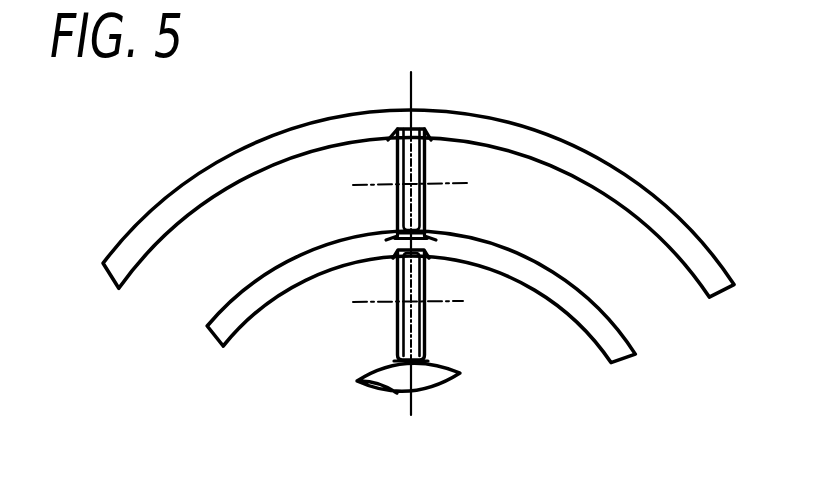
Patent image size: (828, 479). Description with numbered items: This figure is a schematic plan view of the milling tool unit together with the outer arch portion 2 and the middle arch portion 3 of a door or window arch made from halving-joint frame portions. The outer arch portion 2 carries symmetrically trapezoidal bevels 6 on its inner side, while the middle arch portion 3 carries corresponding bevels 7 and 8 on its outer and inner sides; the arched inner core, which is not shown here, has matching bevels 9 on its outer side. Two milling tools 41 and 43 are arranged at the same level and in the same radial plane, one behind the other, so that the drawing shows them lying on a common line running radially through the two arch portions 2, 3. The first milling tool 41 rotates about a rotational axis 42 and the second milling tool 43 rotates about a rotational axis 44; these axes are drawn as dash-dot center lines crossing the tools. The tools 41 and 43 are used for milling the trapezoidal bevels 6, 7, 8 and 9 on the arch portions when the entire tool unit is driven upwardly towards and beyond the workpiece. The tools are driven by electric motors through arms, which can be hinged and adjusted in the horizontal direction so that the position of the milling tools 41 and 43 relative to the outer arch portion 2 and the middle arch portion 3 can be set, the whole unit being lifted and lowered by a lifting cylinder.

The outer arch portion 2 is at (646, 202).
The middle arch portion 3 is at (582, 312).
The trapezoidal bevel 6 is at (416, 128).
The bevel 7 is at (430, 240).
The bevel 8 is at (395, 243).
The bevel 9 is at (380, 386).
The milling tool 41 is at (427, 160).
The rotational axis 42 is at (456, 175).
The milling tool 43 is at (400, 336).
The rotational axis 44 is at (380, 308).